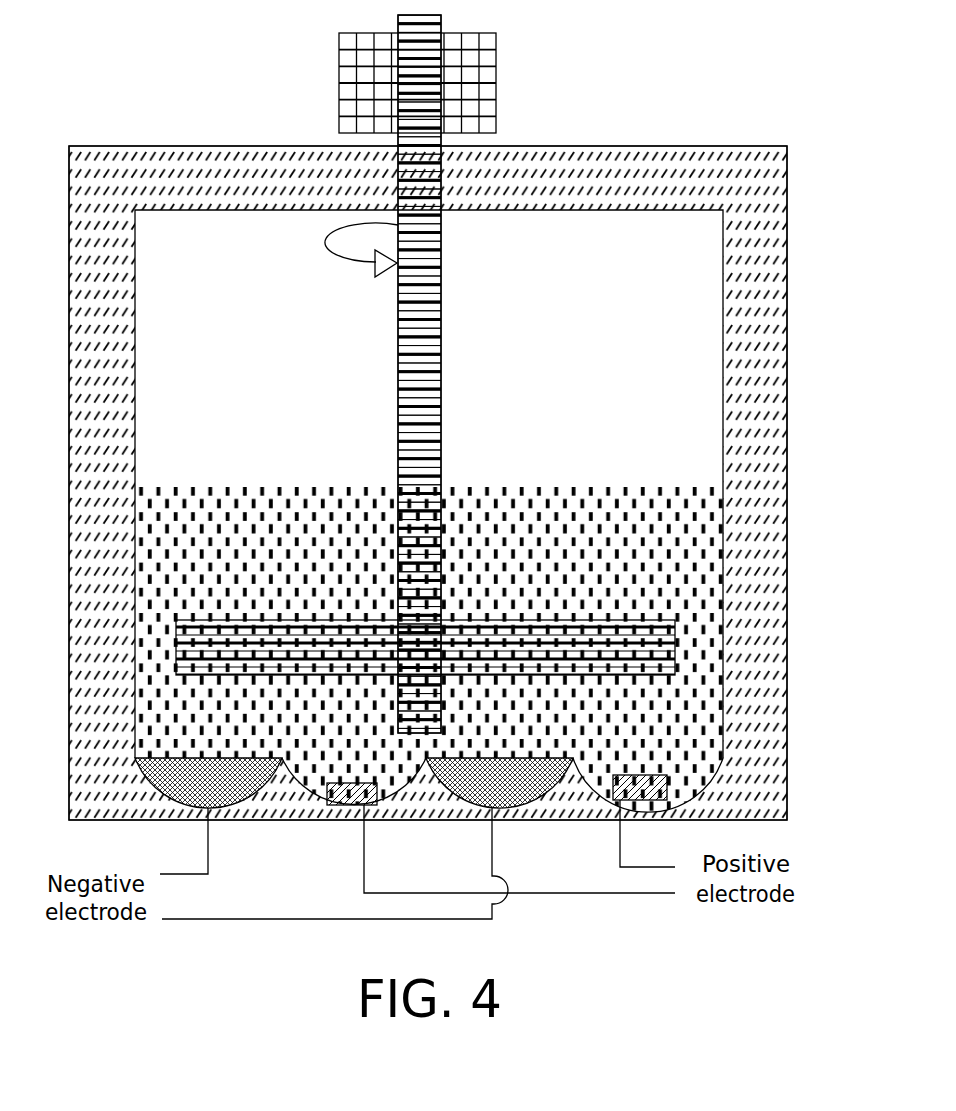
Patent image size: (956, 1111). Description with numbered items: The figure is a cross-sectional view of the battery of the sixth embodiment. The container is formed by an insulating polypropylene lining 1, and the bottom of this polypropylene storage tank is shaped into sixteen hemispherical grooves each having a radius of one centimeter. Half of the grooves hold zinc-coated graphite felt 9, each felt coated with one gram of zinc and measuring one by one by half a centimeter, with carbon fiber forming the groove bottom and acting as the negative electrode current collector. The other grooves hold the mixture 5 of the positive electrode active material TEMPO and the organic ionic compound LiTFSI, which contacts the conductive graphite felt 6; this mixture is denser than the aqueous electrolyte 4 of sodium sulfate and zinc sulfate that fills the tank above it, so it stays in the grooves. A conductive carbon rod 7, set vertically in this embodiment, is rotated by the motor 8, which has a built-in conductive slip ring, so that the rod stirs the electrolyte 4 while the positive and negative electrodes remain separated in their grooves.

The polypropylene lining 1 is at (428, 483).
The aqueous electrolyte 4 is at (429, 621).
The mixture of organic solvent and positive electrode active material 5 is at (308, 796).
The graphite felt 6 is at (344, 777).
The carbon rod 7 is at (436, 343).
The motor 8 is at (480, 101).
The zinc-coated graphite felt 9 is at (354, 838).